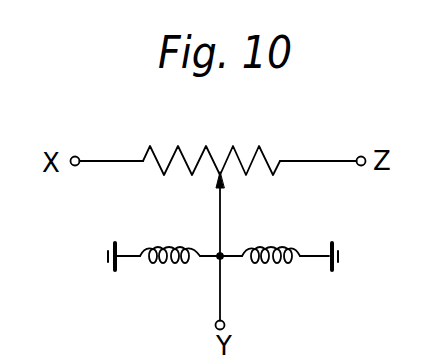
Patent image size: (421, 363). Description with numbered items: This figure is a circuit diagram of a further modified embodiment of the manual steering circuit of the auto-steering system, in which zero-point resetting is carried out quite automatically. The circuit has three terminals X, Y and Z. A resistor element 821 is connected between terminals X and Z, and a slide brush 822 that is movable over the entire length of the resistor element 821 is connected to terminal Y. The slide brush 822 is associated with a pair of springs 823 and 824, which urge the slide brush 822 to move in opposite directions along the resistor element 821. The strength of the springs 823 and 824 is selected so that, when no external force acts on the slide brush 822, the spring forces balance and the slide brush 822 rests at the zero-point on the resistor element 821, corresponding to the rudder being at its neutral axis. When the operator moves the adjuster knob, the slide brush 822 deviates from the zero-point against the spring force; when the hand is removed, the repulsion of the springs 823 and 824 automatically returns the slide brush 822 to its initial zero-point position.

The resistor element 821 is at (207, 146).
The slide brush 822 is at (221, 213).
The spring 823 is at (175, 263).
The spring 824 is at (267, 263).